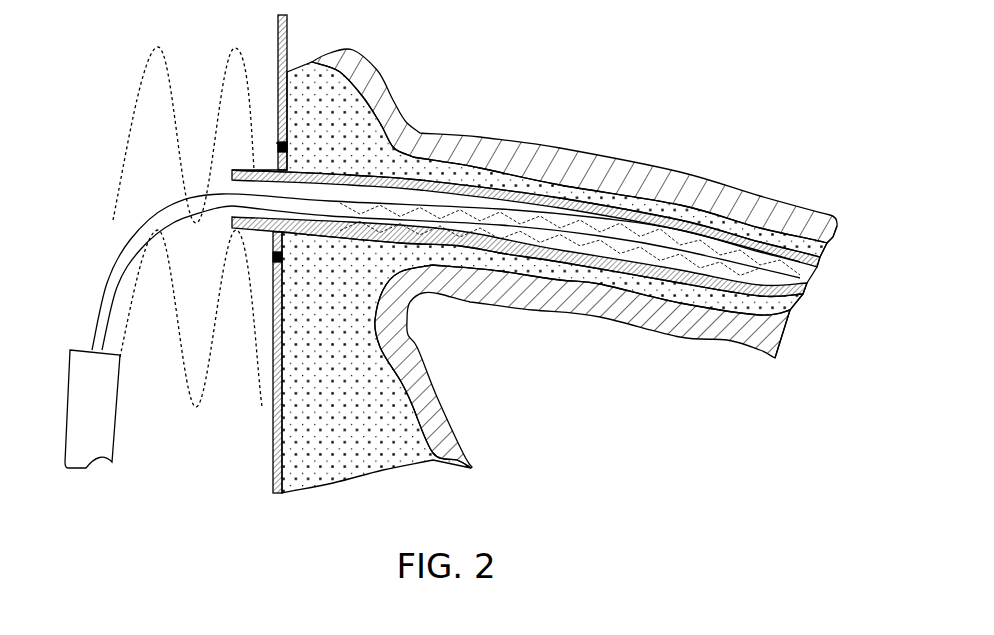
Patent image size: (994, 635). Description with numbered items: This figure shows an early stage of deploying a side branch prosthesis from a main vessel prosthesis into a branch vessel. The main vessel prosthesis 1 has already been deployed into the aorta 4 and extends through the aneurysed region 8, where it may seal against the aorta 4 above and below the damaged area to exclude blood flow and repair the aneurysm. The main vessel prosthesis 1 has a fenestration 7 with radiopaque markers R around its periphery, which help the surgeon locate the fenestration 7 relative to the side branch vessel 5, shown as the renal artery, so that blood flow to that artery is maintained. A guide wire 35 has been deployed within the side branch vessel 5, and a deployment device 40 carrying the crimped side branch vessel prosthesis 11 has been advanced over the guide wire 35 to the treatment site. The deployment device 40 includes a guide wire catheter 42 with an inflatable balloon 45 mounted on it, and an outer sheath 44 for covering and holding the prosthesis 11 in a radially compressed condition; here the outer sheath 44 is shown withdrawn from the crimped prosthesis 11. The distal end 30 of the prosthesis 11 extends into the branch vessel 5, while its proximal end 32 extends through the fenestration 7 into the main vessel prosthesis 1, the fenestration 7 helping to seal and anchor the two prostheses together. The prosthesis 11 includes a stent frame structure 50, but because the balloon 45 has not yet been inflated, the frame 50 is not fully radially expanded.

The main vessel prosthesis 1 is at (272, 436).
The aorta 4 is at (364, 70).
The side branch vessel 5 is at (717, 192).
The fenestration 7 is at (255, 228).
The aneurysed region 8 is at (393, 398).
The side branch vessel prosthesis 11 is at (592, 253).
The distal end 30 is at (817, 267).
The proximal end 32 is at (249, 170).
The guide wire 35 is at (800, 289).
The deployment device 40 is at (167, 184).
The guide wire catheter 42 is at (110, 280).
The outer sheath 44 is at (77, 402).
The inflatable balloon 45 is at (272, 259).
The stent frame structure 50 is at (452, 217).
The radiopaque markers R is at (276, 143).